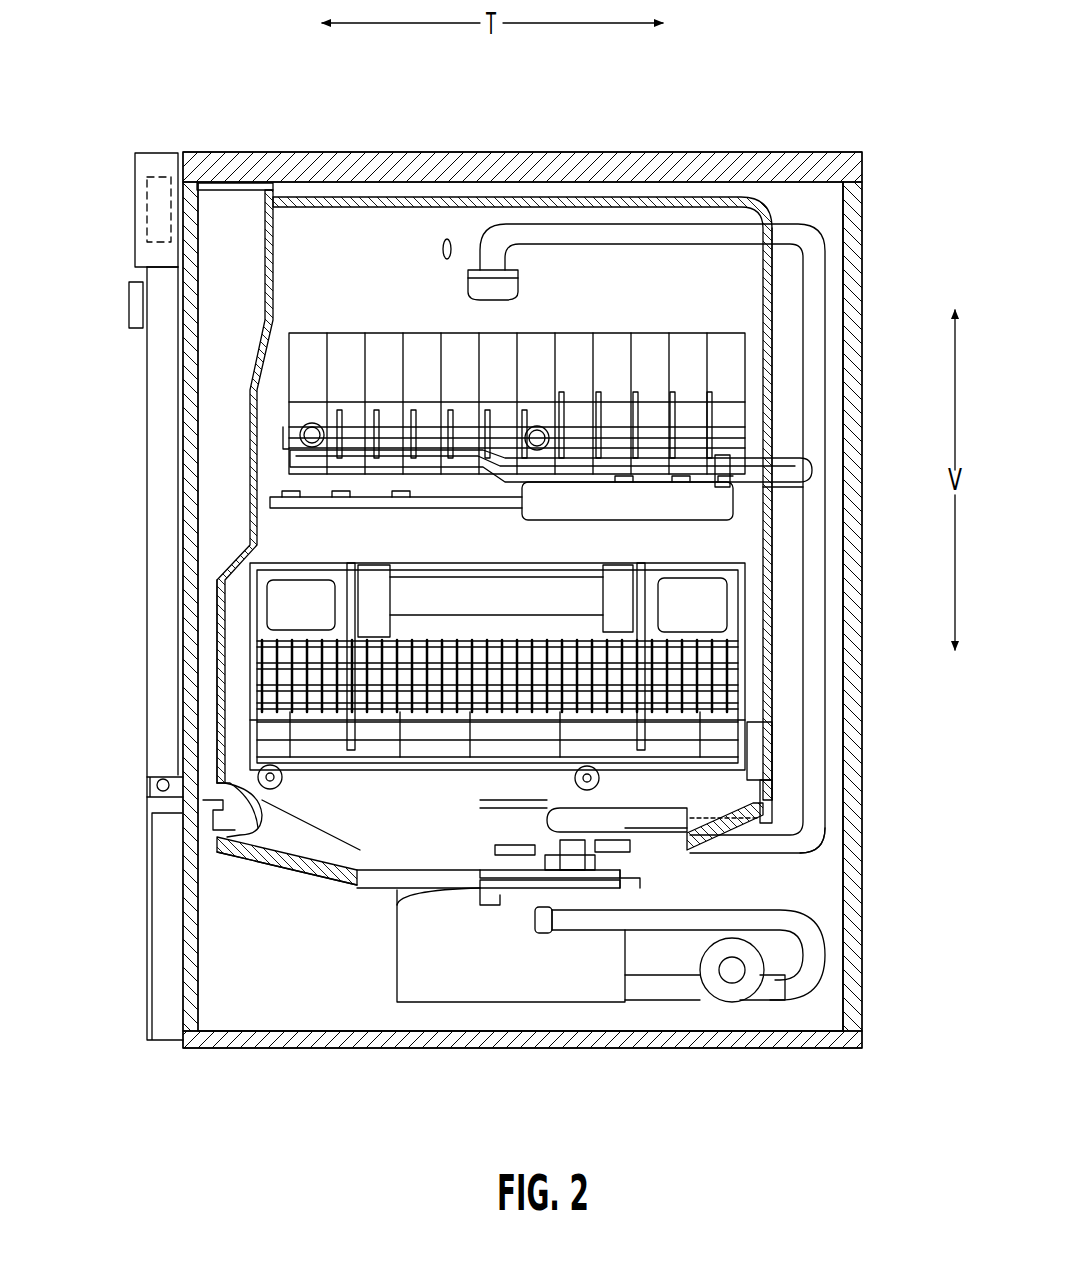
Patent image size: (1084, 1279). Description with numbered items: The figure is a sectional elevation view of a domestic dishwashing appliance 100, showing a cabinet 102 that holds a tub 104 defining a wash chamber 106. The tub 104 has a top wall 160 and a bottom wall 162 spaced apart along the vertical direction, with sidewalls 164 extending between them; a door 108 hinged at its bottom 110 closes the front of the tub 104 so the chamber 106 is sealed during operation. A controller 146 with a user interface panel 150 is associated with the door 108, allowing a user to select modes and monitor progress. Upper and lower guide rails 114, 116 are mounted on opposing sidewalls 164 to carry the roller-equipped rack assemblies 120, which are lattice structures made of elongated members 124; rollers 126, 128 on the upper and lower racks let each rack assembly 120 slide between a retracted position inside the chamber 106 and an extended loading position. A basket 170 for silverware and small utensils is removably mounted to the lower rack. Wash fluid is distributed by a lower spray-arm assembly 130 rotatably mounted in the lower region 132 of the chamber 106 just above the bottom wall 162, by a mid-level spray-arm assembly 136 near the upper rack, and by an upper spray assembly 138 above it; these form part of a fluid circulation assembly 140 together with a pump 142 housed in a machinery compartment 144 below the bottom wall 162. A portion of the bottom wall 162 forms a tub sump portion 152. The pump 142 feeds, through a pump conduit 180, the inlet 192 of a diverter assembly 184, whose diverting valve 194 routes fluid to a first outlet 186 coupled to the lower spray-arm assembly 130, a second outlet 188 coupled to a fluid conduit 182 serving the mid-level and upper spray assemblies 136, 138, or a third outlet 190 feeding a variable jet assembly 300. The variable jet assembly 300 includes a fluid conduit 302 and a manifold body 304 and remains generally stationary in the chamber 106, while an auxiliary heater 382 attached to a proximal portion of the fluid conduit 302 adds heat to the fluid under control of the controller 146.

The dishwashing appliance 100 is at (738, 105).
The cabinet 102 is at (866, 215).
The tub 104 is at (369, 558).
The chamber 106 is at (220, 580).
The door 108 is at (147, 665).
The bottom of the door 110 is at (158, 800).
The upper guide rail 114 is at (290, 435).
The lower guide rail 116 is at (225, 830).
The rack assembly 120 is at (350, 306).
The elongated member 124 is at (258, 778).
The roller 126 is at (290, 455).
The roller 128 is at (747, 792).
The lower spray-arm assembly 130 is at (322, 800).
The lower region of the chamber 132 is at (772, 795).
The mid-level spray-arm assembly 136 is at (555, 510).
The upper spray assembly 138 is at (516, 296).
The fluid circulation assembly 140 is at (830, 575).
The pump 142 is at (757, 995).
The machinery compartment 144 is at (340, 1025).
The controller 146 is at (138, 198).
The user interface panel 150 is at (129, 302).
The tub sump portion 152 is at (397, 945).
The top wall 160 is at (570, 195).
The bottom wall 162 is at (292, 870).
The sidewall 164 is at (367, 233).
The basket 170 is at (700, 580).
The pump conduit 180 is at (815, 935).
The fluid conduit 182 is at (826, 846).
The diverter assembly 184 is at (513, 942).
The first outlet 186 is at (480, 864).
The second outlet 188 is at (637, 832).
The third outlet 190 is at (555, 868).
The inlet 192 is at (558, 888).
The diverting valve 194 is at (497, 890).
The variable jet assembly 300 is at (780, 706).
The fluid conduit 302 is at (735, 805).
The manifold body 304 is at (290, 720).
The auxiliary heater 382 is at (640, 832).